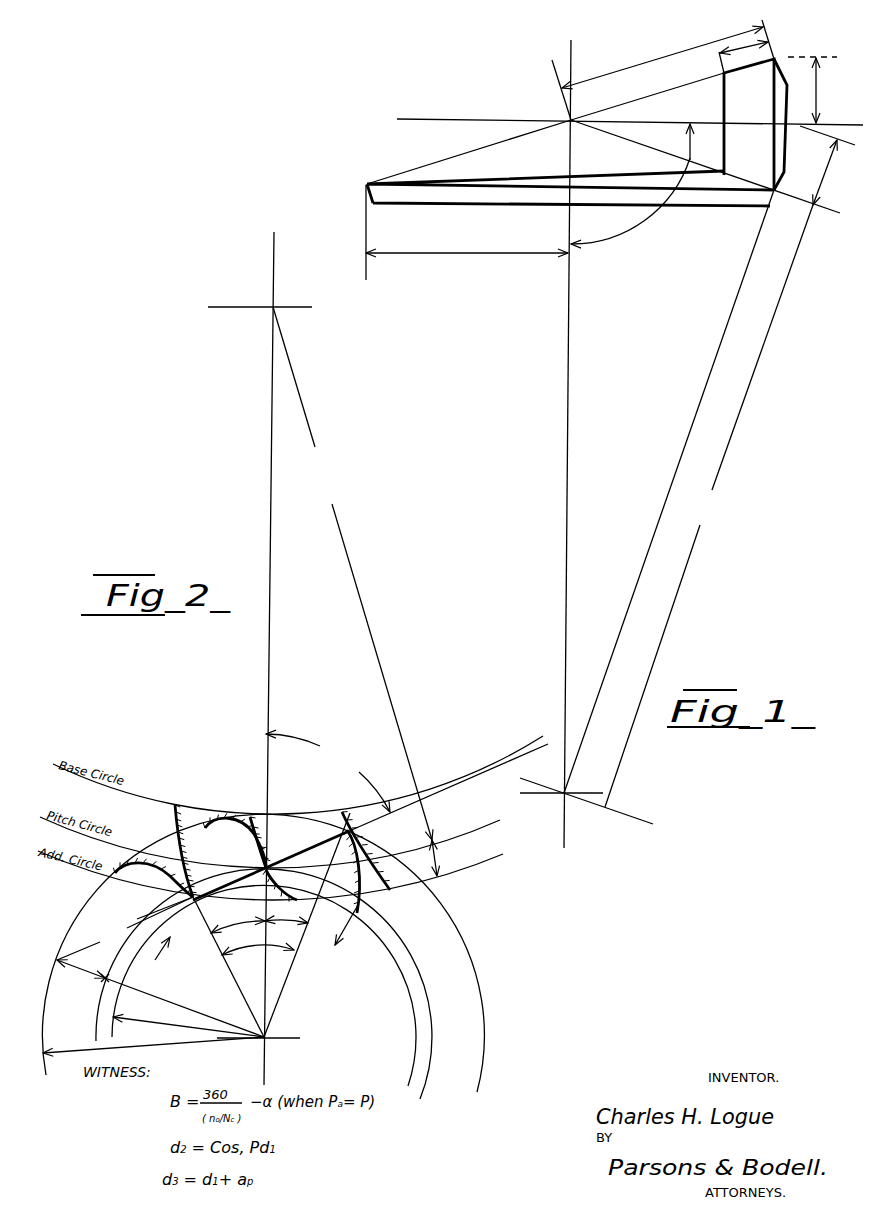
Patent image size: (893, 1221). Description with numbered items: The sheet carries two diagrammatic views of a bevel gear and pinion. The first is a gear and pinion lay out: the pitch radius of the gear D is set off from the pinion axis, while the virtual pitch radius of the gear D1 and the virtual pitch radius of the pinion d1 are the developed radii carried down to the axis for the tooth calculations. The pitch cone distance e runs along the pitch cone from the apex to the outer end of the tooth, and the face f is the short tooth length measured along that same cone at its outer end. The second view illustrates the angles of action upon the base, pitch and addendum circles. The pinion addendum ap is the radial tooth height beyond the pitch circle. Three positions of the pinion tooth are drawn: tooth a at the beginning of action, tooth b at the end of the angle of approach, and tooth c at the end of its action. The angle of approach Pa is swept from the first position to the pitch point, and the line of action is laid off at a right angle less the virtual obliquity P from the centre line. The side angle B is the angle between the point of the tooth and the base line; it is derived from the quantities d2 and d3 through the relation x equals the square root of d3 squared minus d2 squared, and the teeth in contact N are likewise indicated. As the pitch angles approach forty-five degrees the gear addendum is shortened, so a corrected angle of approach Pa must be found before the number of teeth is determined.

In FIG. 1, the pitch cone distance e is at (668, 54).
In FIG. 1, the face f is at (743, 53).
In FIG. 1, the pinion tooth position at end of angle of approach b is at (812, 90).
In FIG. 2, the pinion tooth position at end of angle of approach b is at (236, 853).
In FIG. 1, the virtual pitch radius of the pinion d1 is at (827, 165).
In FIG. 2, the virtual pitch radius of the pinion d1 is at (182, 1005).
In FIG. 1, the pitch radius of the gear D is at (467, 232).
In FIG. 1, the virtual pitch radius of the gear D1 is at (666, 507).
In FIG. 2, the virtual pitch radius of the gear D1 is at (352, 573).
In FIG. 2, the pinion tooth position at beginning of action a is at (153, 877).
In FIG. 2, the pinion tooth position at end of action c is at (360, 862).
In FIG. 2, the quantity in side angle formula d2 is at (188, 1024).
In FIG. 2, the quantity in side angle formula d3 is at (153, 1045).
In FIG. 2, the pinion addendum ap is at (257, 909).
In FIG. 2, the angle of approach Pa is at (238, 923).
In FIG. 2, the side angle B is at (337, 925).
In FIG. 2, the teeth in contact N is at (156, 954).
In FIG. 2, the virtual obliquity P is at (328, 773).